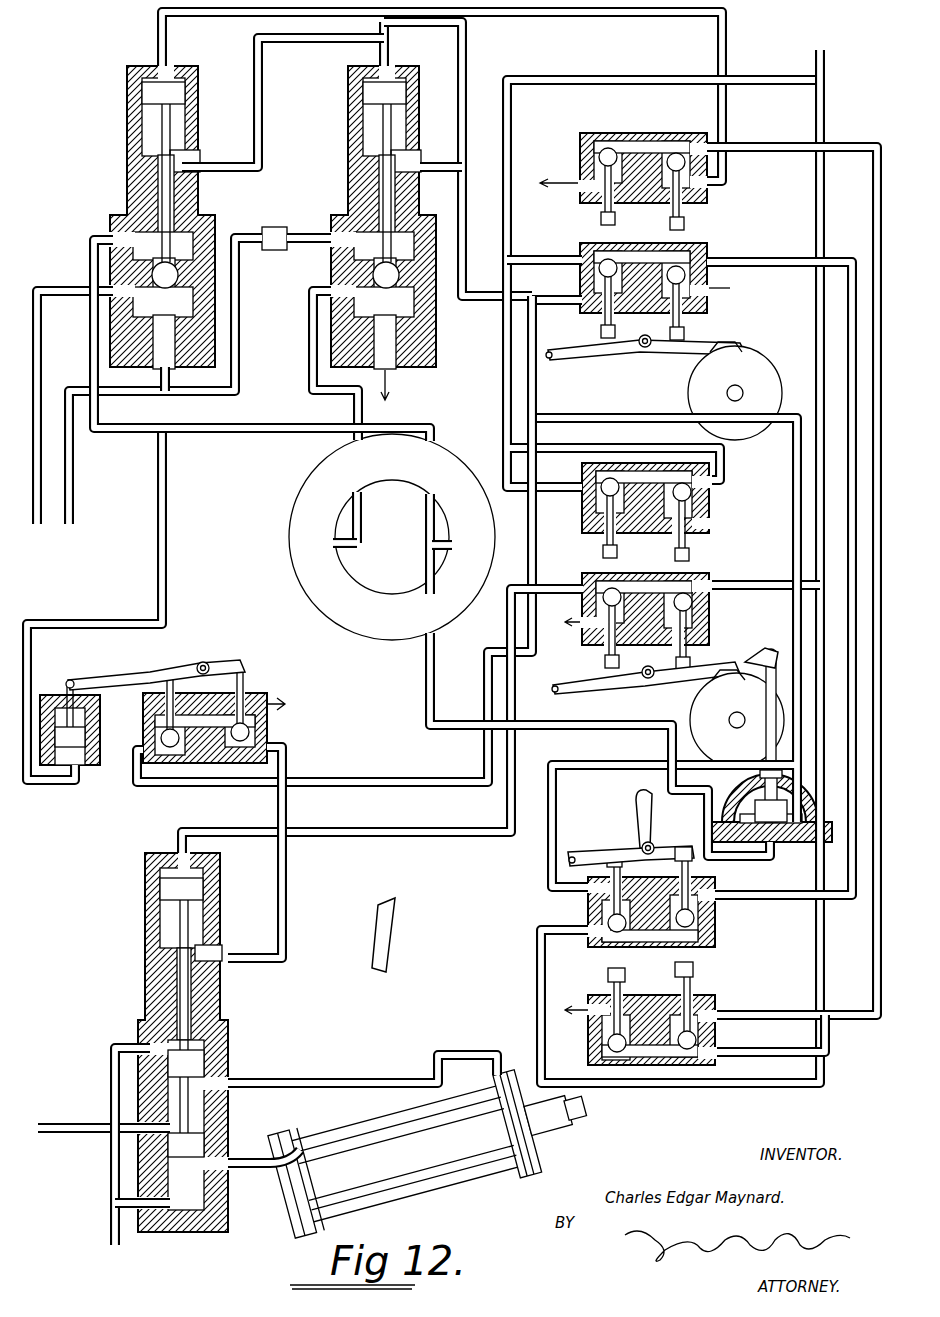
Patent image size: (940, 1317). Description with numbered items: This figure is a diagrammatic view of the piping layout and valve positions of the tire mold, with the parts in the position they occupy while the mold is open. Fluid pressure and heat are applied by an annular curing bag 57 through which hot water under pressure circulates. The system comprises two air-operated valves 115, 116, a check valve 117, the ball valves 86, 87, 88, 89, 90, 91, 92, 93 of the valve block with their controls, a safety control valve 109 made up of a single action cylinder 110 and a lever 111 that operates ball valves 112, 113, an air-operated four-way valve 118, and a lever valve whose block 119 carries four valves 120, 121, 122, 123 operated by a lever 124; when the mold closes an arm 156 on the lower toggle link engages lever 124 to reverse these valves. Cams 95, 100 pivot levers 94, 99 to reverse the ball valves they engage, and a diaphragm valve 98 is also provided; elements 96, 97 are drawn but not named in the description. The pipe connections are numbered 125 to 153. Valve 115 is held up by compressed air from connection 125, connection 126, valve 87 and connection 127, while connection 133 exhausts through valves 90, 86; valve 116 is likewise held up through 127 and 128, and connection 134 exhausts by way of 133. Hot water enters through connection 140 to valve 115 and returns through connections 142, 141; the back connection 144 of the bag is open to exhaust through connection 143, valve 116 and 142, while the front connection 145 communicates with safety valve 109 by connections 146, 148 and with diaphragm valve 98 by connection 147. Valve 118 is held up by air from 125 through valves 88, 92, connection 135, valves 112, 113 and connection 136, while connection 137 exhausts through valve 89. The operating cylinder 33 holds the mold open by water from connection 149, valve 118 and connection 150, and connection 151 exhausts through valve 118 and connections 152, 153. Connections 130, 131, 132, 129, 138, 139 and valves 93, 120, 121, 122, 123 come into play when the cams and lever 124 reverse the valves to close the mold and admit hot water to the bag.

The operating cylinder 33 is at (425, 1180).
The curing bag 57 is at (342, 610).
The valve 86 is at (608, 148).
The valve 87 is at (600, 258).
The valve 88 is at (598, 502).
The valve 89 is at (603, 585).
The valve 90 is at (686, 150).
The valve 91 is at (690, 258).
The valve 92 is at (712, 493).
The valve 93 is at (695, 580).
The lever 94 is at (670, 558).
The cam 95 is at (708, 690).
The link 96 is at (771, 648).
The cam follower housing 97 is at (785, 810).
The diaphragm valve 98 is at (755, 805).
The lever 99 is at (684, 220).
The cam 100 is at (688, 392).
The safety control valve 109 is at (125, 672).
The single action cylinder 110 is at (78, 765).
The lever 111 is at (148, 672).
The valve 112 is at (155, 735).
The valve 113 is at (265, 733).
The air-operated valve 115 is at (127, 192).
The air-operated valve 116 is at (362, 190).
The check valve 117 is at (274, 251).
The four-way valve 118 is at (150, 995).
The block 119 is at (640, 947).
The valve 120 is at (588, 925).
The valve 121 is at (605, 1048).
The valve 122 is at (712, 918).
The valve 123 is at (712, 1040).
The lever 124 is at (595, 825).
The pipe connection 125 is at (680, 78).
The pipe connection 126 is at (565, 262).
The pipe connection 127 is at (255, 165).
The pipe connection 128 is at (445, 164).
The pipe connection 129 is at (530, 350).
The pipe connection 130 is at (825, 125).
The pipe connection 131 is at (772, 590).
The pipe connection 132 is at (798, 1050).
The pipe connection 133 is at (236, 22).
The pipe connection 134 is at (390, 52).
The pipe connection 135 is at (650, 452).
The pipe connection 136 is at (287, 812).
The pipe connection 137 is at (516, 660).
The pipe connection 138 is at (805, 262).
The pipe connection 139 is at (845, 148).
The pipe connection 140 is at (58, 274).
The pipe connection 141 is at (305, 244).
The pipe connection 142 is at (168, 382).
The pipe connection 143 is at (312, 340).
The back connection 144 is at (343, 546).
The front connection 145 is at (448, 548).
The pipe connection 146 is at (100, 240).
The pipe connection 147 is at (428, 730).
The pipe connection 148 is at (166, 482).
The pipe connection 149 is at (98, 1133).
The pipe connection 150 is at (335, 1080).
The pipe connection 151 is at (262, 1168).
The pipe connection 152 is at (115, 1198).
The pipe connection 153 is at (110, 1058).
The arm 156 is at (388, 950).